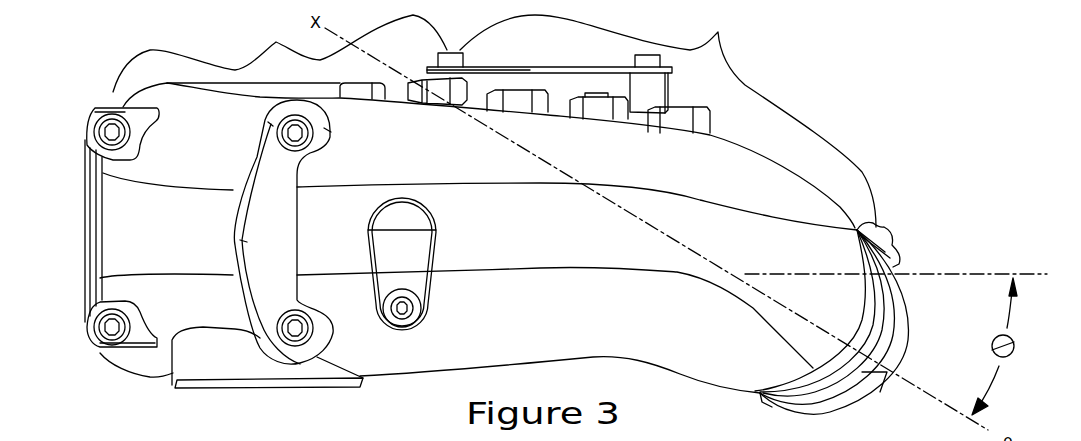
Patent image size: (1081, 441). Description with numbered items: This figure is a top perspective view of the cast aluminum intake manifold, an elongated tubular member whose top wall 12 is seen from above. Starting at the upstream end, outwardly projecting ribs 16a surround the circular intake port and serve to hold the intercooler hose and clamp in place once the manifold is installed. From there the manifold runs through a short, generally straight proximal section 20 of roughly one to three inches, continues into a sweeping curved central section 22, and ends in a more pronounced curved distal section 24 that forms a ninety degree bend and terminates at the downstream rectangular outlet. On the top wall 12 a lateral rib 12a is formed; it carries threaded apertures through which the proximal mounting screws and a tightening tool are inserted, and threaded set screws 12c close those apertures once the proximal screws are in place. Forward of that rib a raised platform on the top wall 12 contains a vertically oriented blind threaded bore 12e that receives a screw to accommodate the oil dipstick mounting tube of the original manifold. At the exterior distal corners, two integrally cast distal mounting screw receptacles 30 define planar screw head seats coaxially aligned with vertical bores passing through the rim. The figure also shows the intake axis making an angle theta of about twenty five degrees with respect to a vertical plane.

The top wall 12 is at (551, 237).
The lateral rib 12a is at (273, 236).
The set screw 12c is at (413, 245).
The blind threaded bore 12e is at (404, 310).
The proximal section 20 is at (885, 242).
The central section 22 is at (668, 120).
The distal section 24 is at (280, 53).
The distal mounting screw receptacle 30 is at (97, 108).
The rib 16a is at (831, 335).